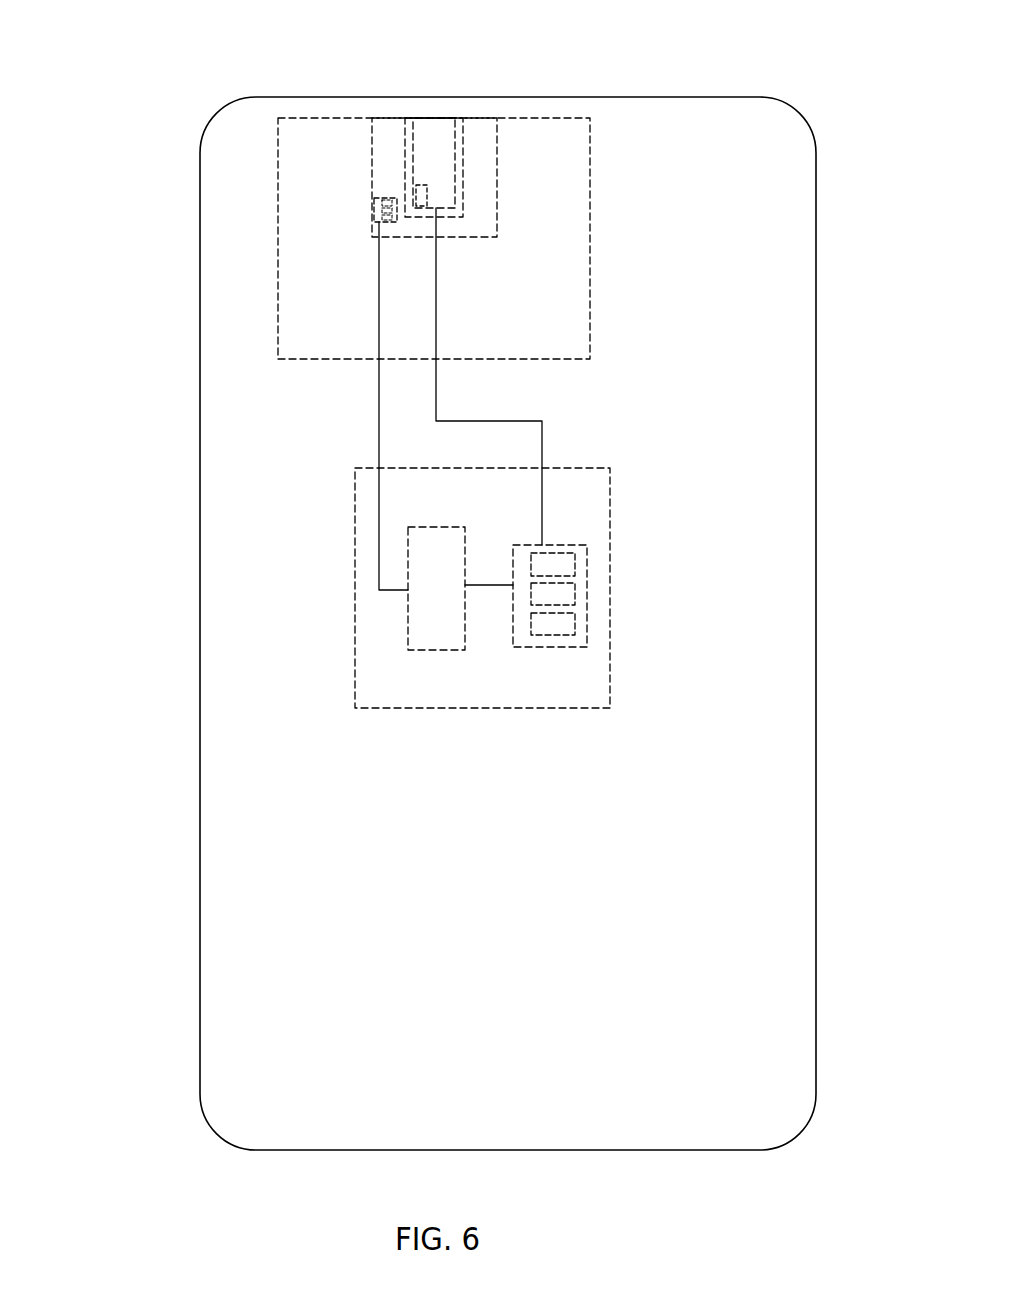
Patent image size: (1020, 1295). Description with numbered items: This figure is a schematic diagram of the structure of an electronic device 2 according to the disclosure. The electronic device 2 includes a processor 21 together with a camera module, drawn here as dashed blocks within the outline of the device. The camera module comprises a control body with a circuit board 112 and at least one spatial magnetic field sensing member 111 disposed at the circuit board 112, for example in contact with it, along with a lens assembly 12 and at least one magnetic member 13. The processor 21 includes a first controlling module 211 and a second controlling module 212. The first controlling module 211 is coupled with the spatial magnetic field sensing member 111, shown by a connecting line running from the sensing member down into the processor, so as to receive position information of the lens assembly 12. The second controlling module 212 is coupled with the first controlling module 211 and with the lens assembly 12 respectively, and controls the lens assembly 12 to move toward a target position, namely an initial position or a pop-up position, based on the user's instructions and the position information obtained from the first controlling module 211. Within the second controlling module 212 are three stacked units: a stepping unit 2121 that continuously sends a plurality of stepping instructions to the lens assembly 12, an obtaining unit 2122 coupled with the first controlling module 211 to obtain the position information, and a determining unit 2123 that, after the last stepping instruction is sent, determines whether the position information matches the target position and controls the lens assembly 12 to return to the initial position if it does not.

The electronic device 2 is at (110, 75).
The spatial magnetic field sensing member 111 is at (392, 208).
The circuit board 112 is at (323, 318).
The lens assembly 12 is at (447, 152).
The magnetic member 13 is at (418, 193).
The processor 21 is at (395, 613).
The first controlling module 211 is at (432, 609).
The second controlling module 212 is at (567, 647).
The stepping unit 2121 is at (573, 558).
The obtaining unit 2122 is at (569, 595).
The determining unit 2123 is at (568, 635).